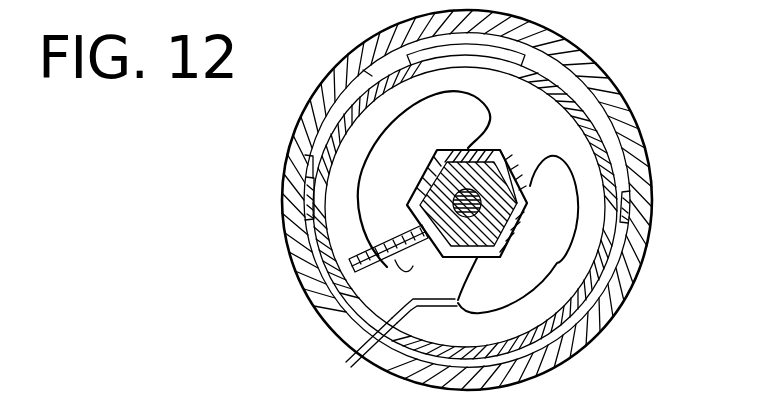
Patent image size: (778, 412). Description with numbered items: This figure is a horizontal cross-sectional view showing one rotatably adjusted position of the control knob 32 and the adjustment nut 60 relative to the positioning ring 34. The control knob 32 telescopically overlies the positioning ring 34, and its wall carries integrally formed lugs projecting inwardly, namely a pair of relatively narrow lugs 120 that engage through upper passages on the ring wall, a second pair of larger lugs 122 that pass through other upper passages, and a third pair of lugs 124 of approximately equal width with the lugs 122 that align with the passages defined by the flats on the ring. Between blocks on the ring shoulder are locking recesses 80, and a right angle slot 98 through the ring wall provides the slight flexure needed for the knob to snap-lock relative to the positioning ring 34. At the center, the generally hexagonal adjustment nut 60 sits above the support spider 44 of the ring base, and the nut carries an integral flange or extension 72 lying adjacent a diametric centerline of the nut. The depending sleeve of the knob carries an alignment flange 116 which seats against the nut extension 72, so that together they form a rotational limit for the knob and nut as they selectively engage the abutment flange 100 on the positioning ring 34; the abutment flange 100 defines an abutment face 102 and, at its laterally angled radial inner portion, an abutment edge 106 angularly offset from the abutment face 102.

The control knob 32 is at (641, 131).
The positioning ring 34 is at (608, 301).
The support spider 44 is at (490, 127).
The adjustment nut 60 is at (502, 164).
The nut alignment flange 72 is at (411, 260).
The locking recesses 80 is at (305, 160).
The right angle slot 98 is at (619, 219).
The abutment flange 100 is at (427, 317).
The abutment face 102 is at (380, 337).
The abutment edge 106 is at (463, 306).
The sleeve alignment flange 116 is at (388, 237).
The narrow lugs 120 is at (304, 201).
The larger lugs 122 is at (383, 63).
The third pair of lugs 124 is at (553, 62).